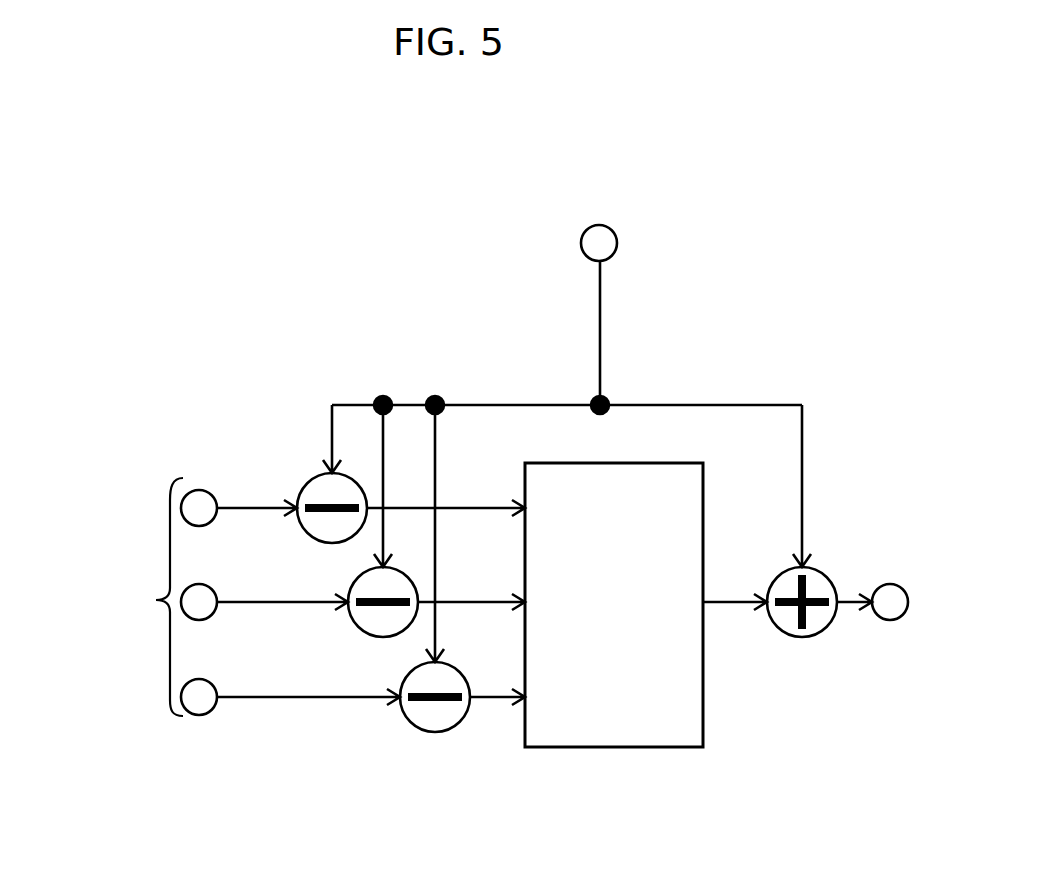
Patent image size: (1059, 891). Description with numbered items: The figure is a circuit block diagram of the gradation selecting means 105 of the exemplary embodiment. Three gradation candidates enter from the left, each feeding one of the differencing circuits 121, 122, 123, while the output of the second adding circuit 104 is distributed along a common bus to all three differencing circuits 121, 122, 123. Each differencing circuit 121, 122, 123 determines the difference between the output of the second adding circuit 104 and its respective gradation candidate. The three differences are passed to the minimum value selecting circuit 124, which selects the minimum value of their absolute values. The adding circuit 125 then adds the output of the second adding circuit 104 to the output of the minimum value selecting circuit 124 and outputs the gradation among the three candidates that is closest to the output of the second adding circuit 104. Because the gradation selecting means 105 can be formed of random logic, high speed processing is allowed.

The second adding circuit 104 is at (597, 298).
The gradation selecting means 105 is at (761, 827).
The differencing circuit 121 is at (307, 532).
The differencing circuit 122 is at (357, 627).
The differencing circuit 123 is at (410, 722).
The minimum value selecting circuit 124 is at (653, 462).
The adding circuit 125 is at (827, 572).